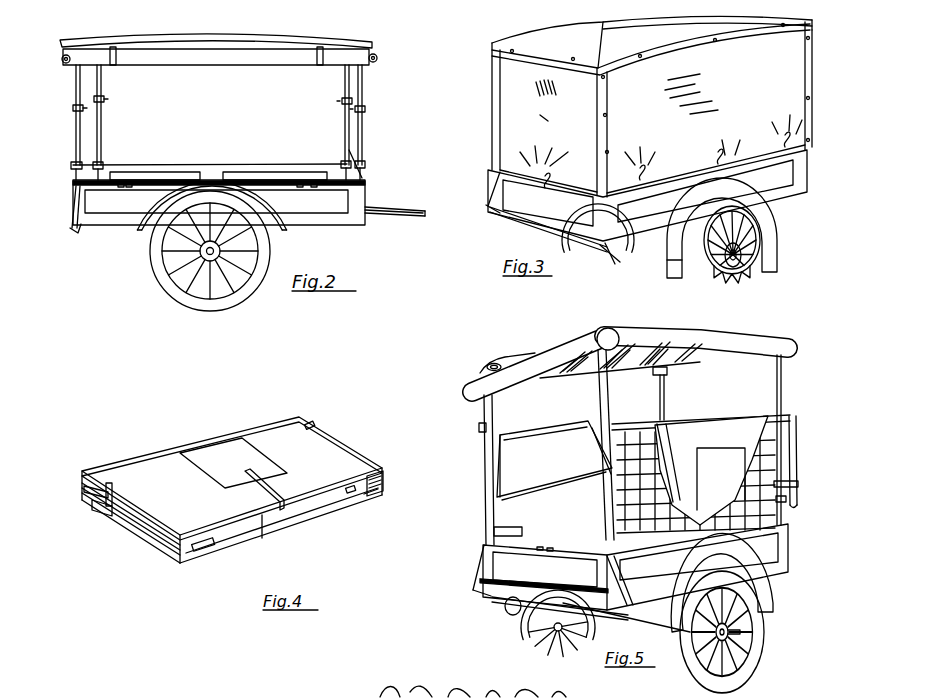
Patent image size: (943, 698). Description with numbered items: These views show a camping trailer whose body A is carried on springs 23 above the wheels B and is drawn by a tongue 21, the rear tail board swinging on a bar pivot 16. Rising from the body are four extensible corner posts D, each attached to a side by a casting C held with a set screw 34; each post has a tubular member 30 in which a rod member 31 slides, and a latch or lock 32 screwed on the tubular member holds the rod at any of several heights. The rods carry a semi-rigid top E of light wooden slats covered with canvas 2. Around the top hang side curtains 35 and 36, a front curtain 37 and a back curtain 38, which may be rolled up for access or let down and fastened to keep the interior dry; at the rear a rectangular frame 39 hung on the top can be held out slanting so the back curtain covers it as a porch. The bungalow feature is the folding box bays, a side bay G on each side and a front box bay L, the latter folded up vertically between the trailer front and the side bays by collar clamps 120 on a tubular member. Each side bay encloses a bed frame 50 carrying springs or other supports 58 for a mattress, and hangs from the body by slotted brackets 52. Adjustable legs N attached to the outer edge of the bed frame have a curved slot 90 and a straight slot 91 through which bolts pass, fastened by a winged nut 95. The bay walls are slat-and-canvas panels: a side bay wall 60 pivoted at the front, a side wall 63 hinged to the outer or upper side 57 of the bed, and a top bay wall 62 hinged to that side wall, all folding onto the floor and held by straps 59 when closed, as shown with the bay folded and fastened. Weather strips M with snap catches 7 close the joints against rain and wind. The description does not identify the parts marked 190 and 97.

In FIG. 2, the top E is at (201, 34).
In FIG. 3, the top E is at (652, 45).
In FIG. 2, the side curtain 36 is at (224, 67).
In FIG. 3, the side curtain 36 is at (709, 107).
In FIG. 5, the side curtain 36 is at (692, 339).
In FIG. 2, the back curtain 38 is at (61, 59).
In FIG. 3, the back curtain 38 is at (550, 120).
In FIG. 5, the back curtain 38 is at (535, 366).
In FIG. 2, the front curtain 37 is at (378, 59).
In FIG. 2, the extensible corner post D is at (77, 143).
In FIG. 2, the casting C is at (345, 164).
In FIG. 2, the tubular member 30 is at (364, 151).
In FIG. 2, the set screw 34 is at (350, 169).
In FIG. 2, the tongue 21 is at (394, 210).
In FIG. 2, the springs 23 is at (180, 241).
In FIG. 2, the wheels B is at (210, 258).
In FIG. 3, the wheels B is at (722, 230).
In FIG. 3, the snap catches 7 is at (607, 152).
In FIG. 3, the body A is at (647, 195).
In FIG. 3, the bar pivot 16 is at (519, 212).
In FIG. 5, the bar pivot 16 is at (507, 599).
In FIG. 4, the top bay wall 62 is at (232, 478).
In FIG. 4, the side wall 63 is at (241, 463).
In FIG. 5, the side wall 63 is at (554, 460).
In FIG. 4, the strap 190 is at (277, 490).
In FIG. 4, the straps 59 is at (315, 427).
In FIG. 4, the side bay wall 60 is at (84, 491).
In FIG. 4, the bracket 52 is at (104, 520).
In FIG. 4, the box bay G is at (137, 527).
In FIG. 5, the box bay G is at (564, 466).
In FIG. 4, the adjustable legs N is at (303, 513).
In FIG. 5, the adjustable legs N is at (522, 432).
In FIG. 4, the weather strips M is at (177, 553).
In FIG. 4, the straight slot 91 is at (197, 561).
In FIG. 4, the outer or upper side 57 is at (180, 562).
In FIG. 4, the bed frame 50 is at (240, 548).
In FIG. 5, the bed frame 50 is at (798, 485).
In FIG. 4, the curved slot 90 is at (353, 493).
In FIG. 4, the latch bar 97 is at (367, 489).
In FIG. 4, the winged nut 95 is at (380, 497).
In FIG. 5, the side curtain 35 is at (505, 357).
In FIG. 5, the canvas 2 is at (653, 345).
In FIG. 5, the latch or lock 32 is at (479, 428).
In FIG. 5, the rod member 31 is at (666, 405).
In FIG. 5, the front box bay L is at (701, 474).
In FIG. 5, the rectangular frame 39 is at (497, 450).
In FIG. 5, the collar clamps 120 is at (788, 501).
In FIG. 5, the springs or other supports 58 is at (750, 523).